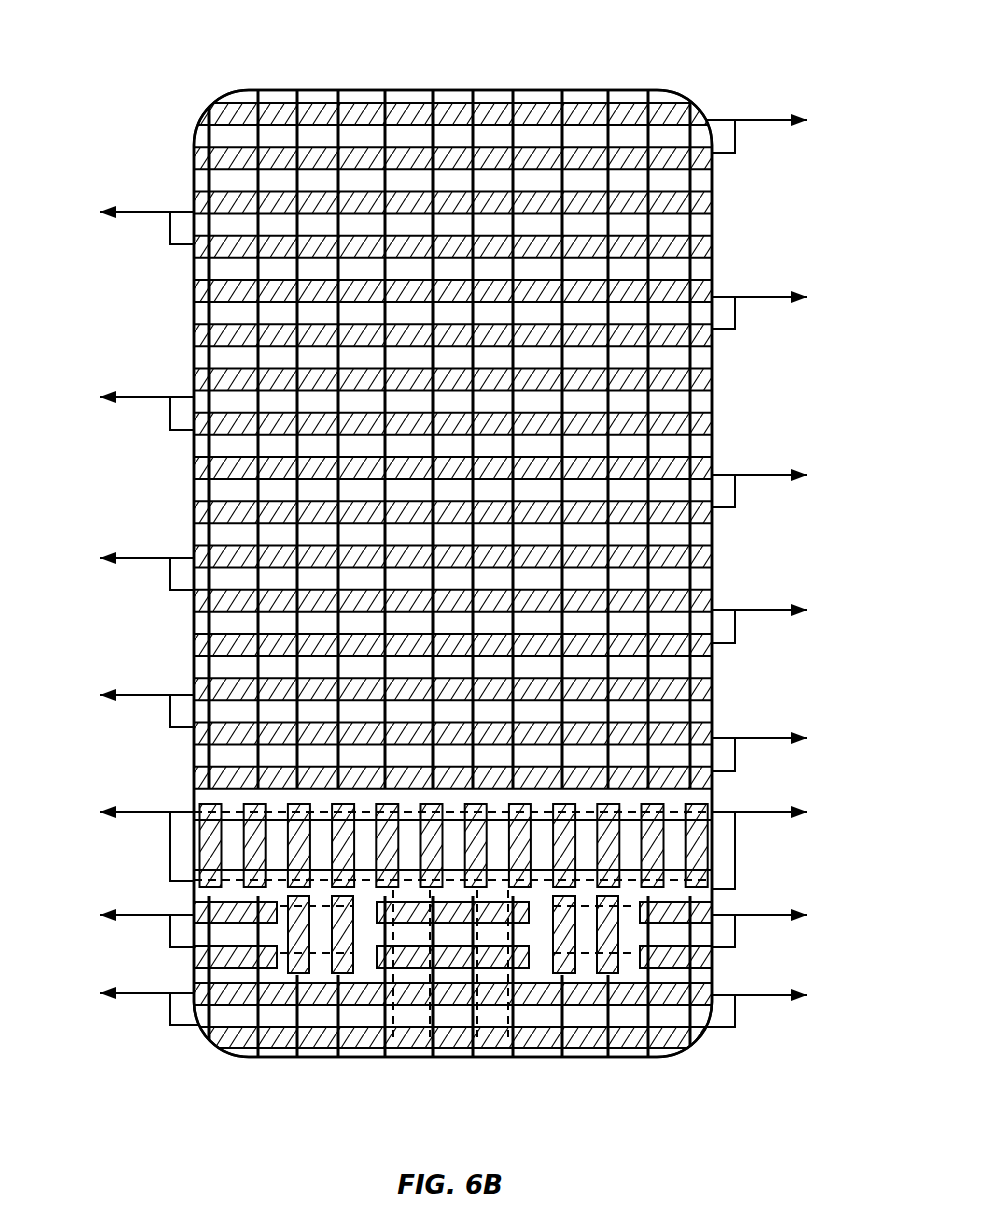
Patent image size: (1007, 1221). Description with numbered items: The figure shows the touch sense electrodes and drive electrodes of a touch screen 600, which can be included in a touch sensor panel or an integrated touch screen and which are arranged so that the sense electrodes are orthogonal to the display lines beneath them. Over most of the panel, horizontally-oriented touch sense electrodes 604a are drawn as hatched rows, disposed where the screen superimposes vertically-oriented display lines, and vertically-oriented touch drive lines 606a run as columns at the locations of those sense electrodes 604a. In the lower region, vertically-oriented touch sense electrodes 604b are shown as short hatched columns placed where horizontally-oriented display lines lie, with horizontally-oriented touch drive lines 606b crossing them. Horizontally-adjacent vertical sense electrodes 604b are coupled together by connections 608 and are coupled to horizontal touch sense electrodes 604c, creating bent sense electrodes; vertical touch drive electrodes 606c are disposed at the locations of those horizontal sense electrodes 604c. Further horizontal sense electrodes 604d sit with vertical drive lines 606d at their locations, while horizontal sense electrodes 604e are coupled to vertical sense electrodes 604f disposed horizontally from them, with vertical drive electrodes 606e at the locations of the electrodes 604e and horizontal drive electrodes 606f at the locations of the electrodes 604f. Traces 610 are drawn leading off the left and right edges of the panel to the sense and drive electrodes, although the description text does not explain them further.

The touch screen 600 is at (116, 22).
The horizontally-oriented touch sense electrode 604a is at (198, 157).
The vertically-oriented touch drive line 606a is at (704, 398).
The routing traces 610 is at (767, 300).
The connection 608 is at (490, 827).
The vertically-oriented touch sense electrode 604b is at (575, 853).
The horizontally-oriented touch drive line 606b is at (706, 812).
The horizontally-oriented touch sense electrode 604c is at (508, 968).
The vertically-oriented touch drive line 606c is at (473, 1036).
The horizontally-oriented touch sense electrode 604d is at (688, 1028).
The vertically-oriented touch drive line 606d is at (653, 968).
The horizontally-oriented touch sense electrode 604e is at (708, 957).
The vertically-oriented touch drive line 606e is at (705, 925).
The vertically-oriented touch sense electrode 604f is at (613, 970).
The horizontally-oriented touch drive line 606f is at (567, 957).